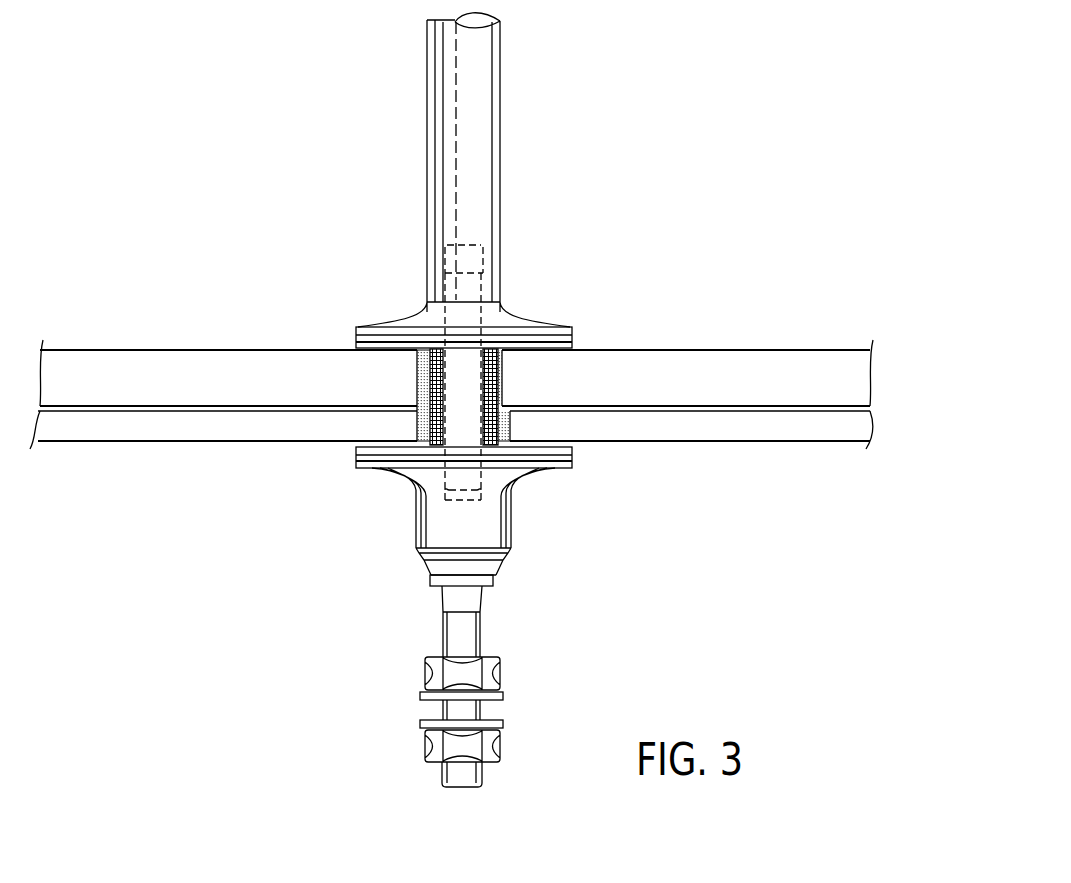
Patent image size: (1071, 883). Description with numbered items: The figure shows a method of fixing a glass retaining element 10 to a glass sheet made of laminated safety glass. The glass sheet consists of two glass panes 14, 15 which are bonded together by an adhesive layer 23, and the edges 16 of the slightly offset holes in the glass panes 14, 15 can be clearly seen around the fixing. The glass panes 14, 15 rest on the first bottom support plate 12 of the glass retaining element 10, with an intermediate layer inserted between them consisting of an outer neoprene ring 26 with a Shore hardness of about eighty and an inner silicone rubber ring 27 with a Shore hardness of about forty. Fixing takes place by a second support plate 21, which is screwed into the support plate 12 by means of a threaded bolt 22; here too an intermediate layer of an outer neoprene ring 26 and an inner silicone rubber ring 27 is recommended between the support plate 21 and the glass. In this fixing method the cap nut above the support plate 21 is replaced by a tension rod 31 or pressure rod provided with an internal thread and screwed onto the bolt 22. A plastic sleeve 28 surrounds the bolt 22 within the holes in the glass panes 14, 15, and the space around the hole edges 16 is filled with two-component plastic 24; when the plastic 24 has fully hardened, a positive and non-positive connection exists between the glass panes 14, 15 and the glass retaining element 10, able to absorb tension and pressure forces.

The glass retaining element 10 is at (413, 526).
The first bottom support plate 12 is at (387, 468).
The glass pane 14 is at (145, 370).
The glass pane 15 is at (112, 429).
The edges of the holes 16 is at (503, 382).
The second support plate 21 is at (507, 320).
The threaded bolt 22 is at (457, 397).
The adhesive layer 23 is at (215, 407).
The plastic 24 is at (422, 422).
The outer neoprene ring 26 is at (373, 343).
The inner silicone rubber ring 27 is at (515, 343).
The plastic sleeve 28 is at (500, 435).
The tension rod 31 is at (475, 118).